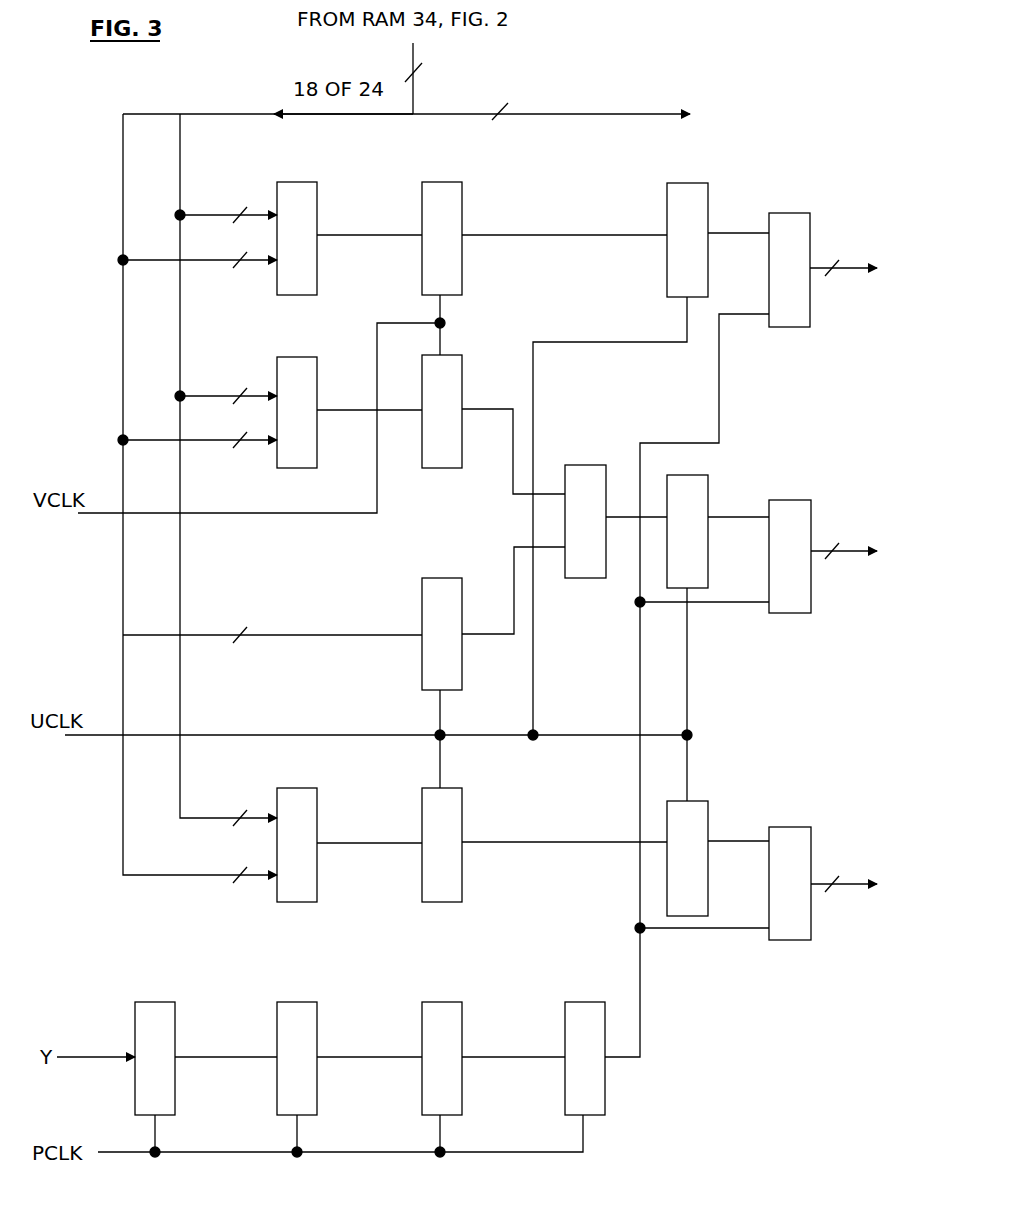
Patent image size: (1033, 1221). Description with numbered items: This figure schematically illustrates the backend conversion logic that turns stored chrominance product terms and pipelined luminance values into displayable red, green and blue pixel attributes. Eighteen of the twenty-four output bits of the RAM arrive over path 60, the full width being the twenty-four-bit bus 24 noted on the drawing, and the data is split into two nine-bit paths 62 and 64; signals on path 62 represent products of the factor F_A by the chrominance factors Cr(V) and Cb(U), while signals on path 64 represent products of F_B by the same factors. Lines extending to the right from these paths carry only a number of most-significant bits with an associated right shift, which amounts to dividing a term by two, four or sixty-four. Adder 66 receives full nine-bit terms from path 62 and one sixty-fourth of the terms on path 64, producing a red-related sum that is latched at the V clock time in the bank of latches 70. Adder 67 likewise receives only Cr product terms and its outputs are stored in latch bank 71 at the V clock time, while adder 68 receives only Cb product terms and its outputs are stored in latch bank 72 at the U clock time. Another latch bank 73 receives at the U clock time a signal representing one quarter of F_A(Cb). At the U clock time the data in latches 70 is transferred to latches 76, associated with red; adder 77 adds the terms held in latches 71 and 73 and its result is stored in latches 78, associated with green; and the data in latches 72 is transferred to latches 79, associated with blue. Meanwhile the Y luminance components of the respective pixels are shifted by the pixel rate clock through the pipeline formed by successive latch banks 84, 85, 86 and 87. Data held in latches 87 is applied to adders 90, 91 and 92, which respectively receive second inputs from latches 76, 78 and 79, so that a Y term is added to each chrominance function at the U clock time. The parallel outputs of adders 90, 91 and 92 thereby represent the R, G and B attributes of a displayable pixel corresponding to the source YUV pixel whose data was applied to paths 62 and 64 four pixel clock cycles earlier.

The 24-bit data bus from RAM 34 24 is at (471, 81).
The path 60 is at (243, 113).
The 9-bit path 62 is at (122, 166).
The 9-bit path 64 is at (179, 166).
The adder 66 is at (292, 181).
The adder 67 is at (277, 365).
The adder 68 is at (317, 873).
The bank of latches (LV1) 70 is at (421, 258).
The latch bank (LV2) 71 is at (421, 392).
The latch bank (LU2) 72 is at (462, 815).
The latch bank (LU1) 73 is at (462, 595).
The latches (LR) 76 is at (666, 218).
The adder 77 is at (597, 465).
The latches (LG) 78 is at (708, 501).
The latches (LB) 79 is at (708, 815).
The latch bank (LY1) 84 is at (176, 1013).
The latch bank (LY2) 85 is at (318, 1013).
The latch bank (LY3) 86 is at (462, 1011).
The latch bank (LY4) 87 is at (605, 1011).
The adder 90 is at (810, 228).
The adder 91 is at (811, 518).
The adder 92 is at (811, 833).